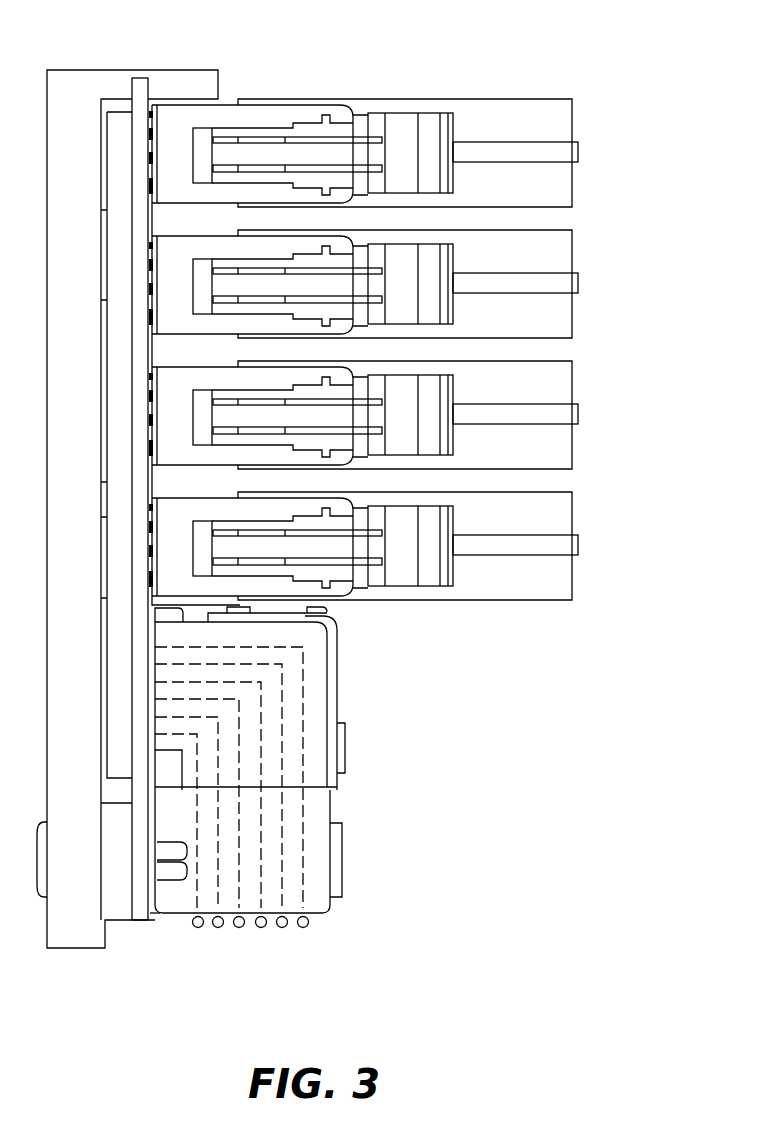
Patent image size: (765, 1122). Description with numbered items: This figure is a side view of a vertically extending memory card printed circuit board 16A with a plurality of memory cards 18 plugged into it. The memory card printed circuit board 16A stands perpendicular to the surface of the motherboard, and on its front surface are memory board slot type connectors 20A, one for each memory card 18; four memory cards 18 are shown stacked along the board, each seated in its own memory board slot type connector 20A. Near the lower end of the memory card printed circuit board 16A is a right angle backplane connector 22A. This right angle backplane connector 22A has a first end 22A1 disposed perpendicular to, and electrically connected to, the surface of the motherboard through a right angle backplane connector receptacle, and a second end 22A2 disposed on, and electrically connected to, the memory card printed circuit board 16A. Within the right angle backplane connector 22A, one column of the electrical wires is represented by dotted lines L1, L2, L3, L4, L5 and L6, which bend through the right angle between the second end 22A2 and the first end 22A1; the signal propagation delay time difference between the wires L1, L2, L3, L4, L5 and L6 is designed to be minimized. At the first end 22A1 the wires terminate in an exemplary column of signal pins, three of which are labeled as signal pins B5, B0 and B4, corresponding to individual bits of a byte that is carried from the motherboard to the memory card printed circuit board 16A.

The memory card printed circuit board 16A is at (139, 92).
The memory board slot type connector 20A is at (247, 115).
The memory card 18 is at (553, 150).
The right angle backplane connector 22A is at (344, 796).
The first end 22A1 is at (323, 797).
The second end 22A2 is at (317, 657).
The electrical wire L1 is at (303, 687).
The electrical wire L2 is at (283, 718).
The electrical wire L3 is at (261, 822).
The electrical wire L4 is at (240, 840).
The electrical wire L5 is at (218, 857).
The electrical wire L6 is at (197, 878).
The signal pin B5 is at (261, 928).
The signal pin B0 is at (283, 928).
The signal pin B4 is at (303, 928).